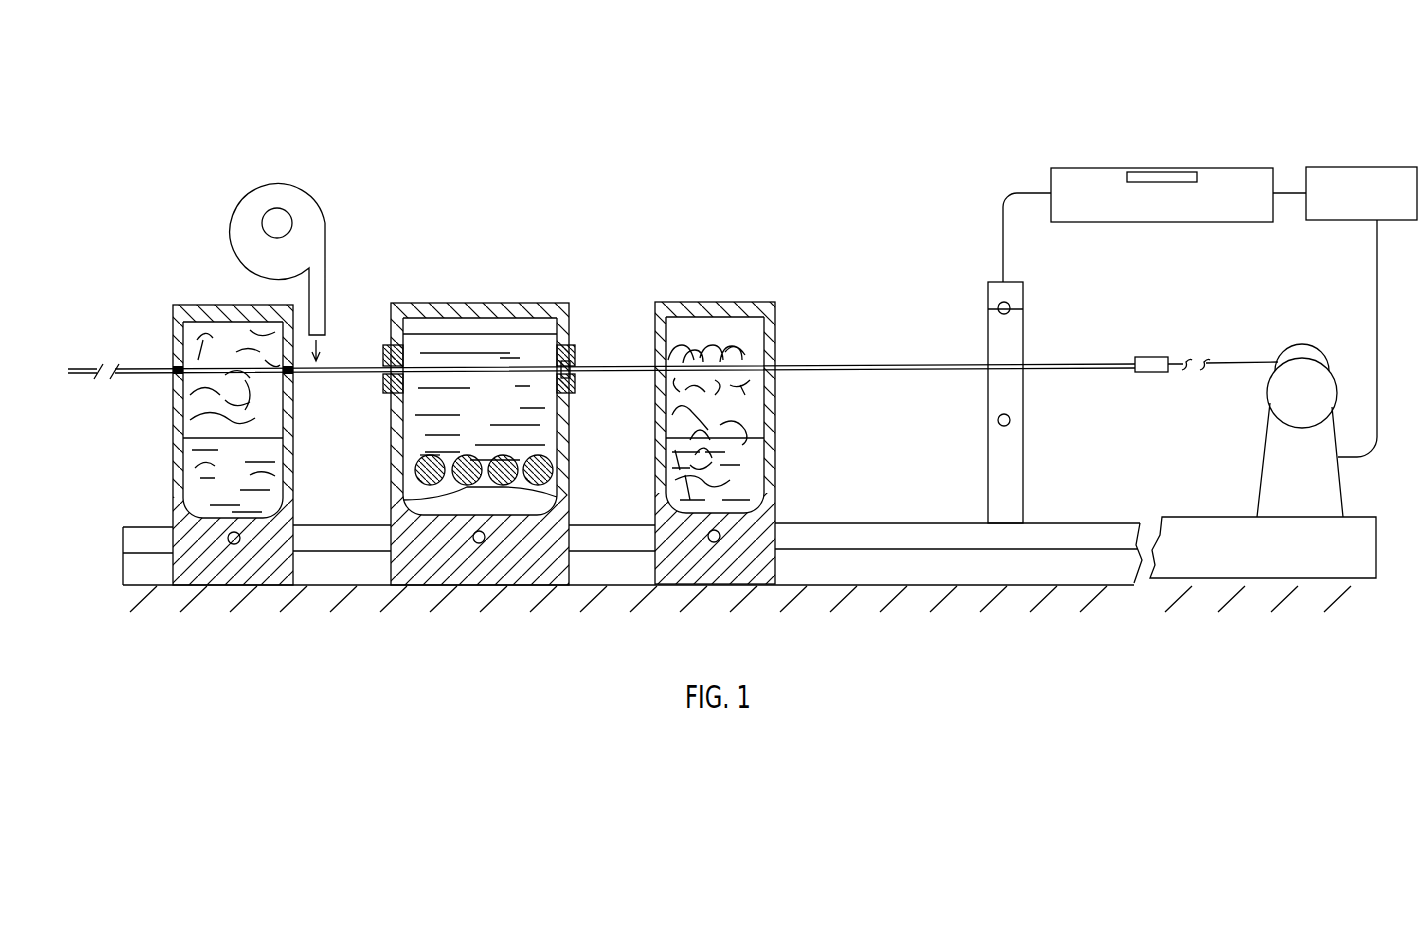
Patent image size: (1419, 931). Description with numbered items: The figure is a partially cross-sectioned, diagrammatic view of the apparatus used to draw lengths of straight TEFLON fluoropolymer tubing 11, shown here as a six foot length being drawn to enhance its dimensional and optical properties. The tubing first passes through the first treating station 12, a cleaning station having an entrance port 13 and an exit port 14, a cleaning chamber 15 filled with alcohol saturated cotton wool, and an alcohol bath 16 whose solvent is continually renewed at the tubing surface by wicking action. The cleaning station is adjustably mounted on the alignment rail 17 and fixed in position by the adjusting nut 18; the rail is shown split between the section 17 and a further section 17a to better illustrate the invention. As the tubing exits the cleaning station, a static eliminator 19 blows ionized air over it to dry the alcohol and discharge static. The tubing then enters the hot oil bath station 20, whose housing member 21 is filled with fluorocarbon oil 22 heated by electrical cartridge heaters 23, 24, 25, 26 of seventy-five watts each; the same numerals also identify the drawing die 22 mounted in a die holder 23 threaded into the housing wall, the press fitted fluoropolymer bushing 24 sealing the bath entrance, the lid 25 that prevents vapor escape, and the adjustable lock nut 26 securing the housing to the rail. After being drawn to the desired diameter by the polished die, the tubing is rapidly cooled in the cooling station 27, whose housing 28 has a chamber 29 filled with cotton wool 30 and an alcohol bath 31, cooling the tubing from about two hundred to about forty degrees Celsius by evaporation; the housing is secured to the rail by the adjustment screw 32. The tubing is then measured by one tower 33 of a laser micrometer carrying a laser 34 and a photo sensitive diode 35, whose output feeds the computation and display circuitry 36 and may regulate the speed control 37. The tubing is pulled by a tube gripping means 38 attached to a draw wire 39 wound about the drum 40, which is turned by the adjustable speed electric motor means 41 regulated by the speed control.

The fluoropolymer tubing 11 is at (338, 362).
The first treating station 12 is at (188, 300).
The entrance port 13 is at (170, 378).
The exit port 14 is at (296, 377).
The cleaning chamber 15 is at (215, 355).
The alcohol bath 16 is at (268, 478).
The alignment rail 17 is at (326, 536).
The alignment rail section 17a is at (1195, 527).
The adjusting nut 18 is at (237, 544).
The static eliminator 19 is at (315, 231).
The hot oil bath station 20 is at (413, 297).
The housing member 21 is at (570, 420).
The fluorocarbon oil / drawing die 22 is at (475, 419).
The die holder / cartridge heater 23 is at (575, 352).
The fluoropolymer bushing 24 is at (387, 350).
The lid 25 is at (495, 303).
The adjustable lock nut / cartridge heater 26 is at (553, 462).
The cooling station 27 is at (701, 295).
The housing 28 is at (776, 435).
The chamber 29 is at (703, 340).
The cotton wool 30 is at (703, 418).
The alcohol bath 31 is at (700, 499).
The adjustment screw 32 is at (716, 542).
The laser micrometer tower 33 is at (988, 323).
The laser 34 is at (1012, 305).
The photo sensitive diode 35 is at (1012, 419).
The computation and display circuitry 36 is at (1150, 222).
The speed control 37 is at (1322, 220).
The tube gripping means 38 is at (1162, 357).
The draw wire 39 is at (1230, 368).
The drum 40 is at (1289, 405).
The electric motor means 41 is at (1300, 345).